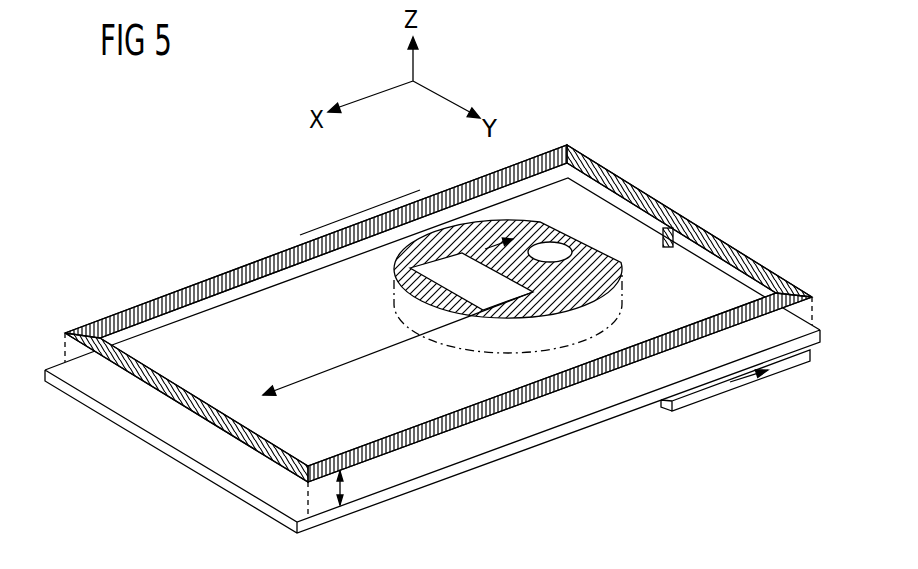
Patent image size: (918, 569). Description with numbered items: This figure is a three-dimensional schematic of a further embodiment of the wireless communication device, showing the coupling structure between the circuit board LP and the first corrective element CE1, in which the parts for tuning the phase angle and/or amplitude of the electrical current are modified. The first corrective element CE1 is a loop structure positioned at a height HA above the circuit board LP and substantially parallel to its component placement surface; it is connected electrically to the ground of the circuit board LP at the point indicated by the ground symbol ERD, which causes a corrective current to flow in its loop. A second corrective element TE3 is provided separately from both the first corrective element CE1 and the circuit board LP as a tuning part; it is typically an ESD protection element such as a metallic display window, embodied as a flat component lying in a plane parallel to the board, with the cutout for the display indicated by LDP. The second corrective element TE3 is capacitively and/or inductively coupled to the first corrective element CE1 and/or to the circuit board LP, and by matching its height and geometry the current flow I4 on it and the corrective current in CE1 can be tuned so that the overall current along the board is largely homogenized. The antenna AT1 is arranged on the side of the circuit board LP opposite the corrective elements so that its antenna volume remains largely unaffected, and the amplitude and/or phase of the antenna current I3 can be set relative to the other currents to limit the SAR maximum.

The circuit board LP is at (243, 496).
The first corrective element CE1 is at (463, 423).
The height HA is at (343, 488).
The cutout for the display LDP is at (398, 283).
The second corrective element TE3 is at (562, 240).
The corrective current I4 is at (500, 245).
The ground symbol ERD is at (672, 241).
The antenna AT1 is at (700, 392).
The electrical current on the antenna I3 is at (738, 384).